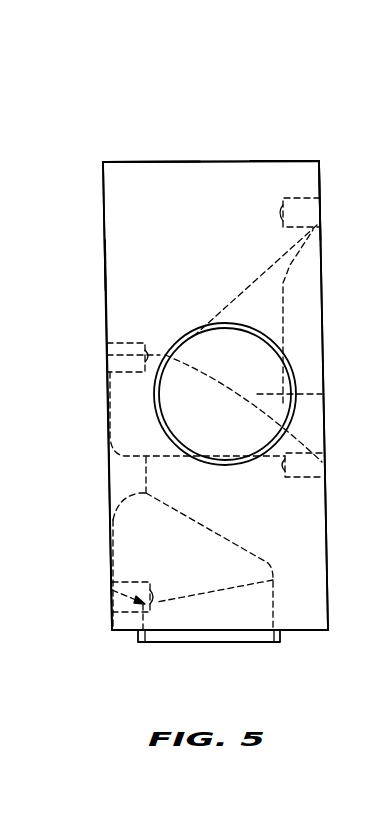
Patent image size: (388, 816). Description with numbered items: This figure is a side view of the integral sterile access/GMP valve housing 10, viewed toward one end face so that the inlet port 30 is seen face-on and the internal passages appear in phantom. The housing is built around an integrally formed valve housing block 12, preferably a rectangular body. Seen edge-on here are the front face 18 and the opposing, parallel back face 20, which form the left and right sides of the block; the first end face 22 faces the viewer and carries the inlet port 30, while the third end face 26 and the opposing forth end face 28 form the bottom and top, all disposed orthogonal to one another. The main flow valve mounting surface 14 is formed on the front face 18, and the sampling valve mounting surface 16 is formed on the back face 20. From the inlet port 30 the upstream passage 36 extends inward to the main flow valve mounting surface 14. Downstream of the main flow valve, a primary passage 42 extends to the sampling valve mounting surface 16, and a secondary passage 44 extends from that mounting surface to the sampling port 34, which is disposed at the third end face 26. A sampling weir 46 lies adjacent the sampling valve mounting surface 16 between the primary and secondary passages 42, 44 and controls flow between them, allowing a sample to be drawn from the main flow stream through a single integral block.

The valve housing 10 is at (116, 122).
The valve housing block 12 is at (121, 162).
The main flow valve mounting surface 14 is at (322, 271).
The sampling valve mounting surface 16 is at (110, 520).
The front face 18 is at (322, 176).
The back face 20 is at (105, 201).
The first end face 22 is at (115, 259).
The third end face 26 is at (295, 632).
The forth end face 28 is at (211, 161).
The inlet port 30 is at (290, 363).
The sampling port 34 is at (138, 639).
The upstream passage 36 is at (246, 438).
The primary passage 42 is at (138, 425).
The secondary passage 44 is at (143, 553).
The sampling weir 46 is at (136, 481).